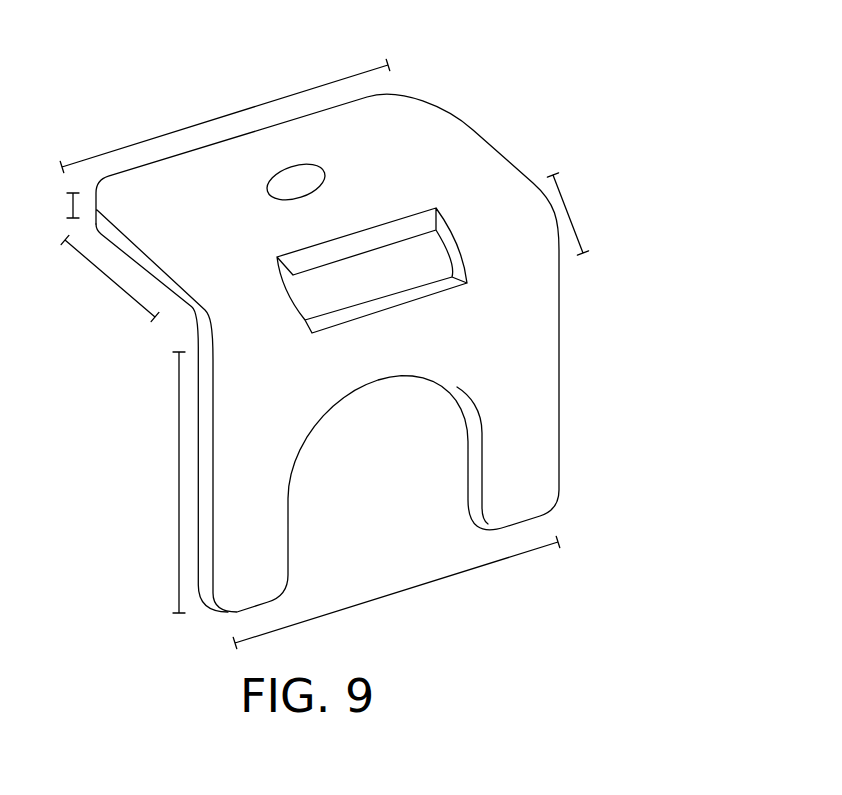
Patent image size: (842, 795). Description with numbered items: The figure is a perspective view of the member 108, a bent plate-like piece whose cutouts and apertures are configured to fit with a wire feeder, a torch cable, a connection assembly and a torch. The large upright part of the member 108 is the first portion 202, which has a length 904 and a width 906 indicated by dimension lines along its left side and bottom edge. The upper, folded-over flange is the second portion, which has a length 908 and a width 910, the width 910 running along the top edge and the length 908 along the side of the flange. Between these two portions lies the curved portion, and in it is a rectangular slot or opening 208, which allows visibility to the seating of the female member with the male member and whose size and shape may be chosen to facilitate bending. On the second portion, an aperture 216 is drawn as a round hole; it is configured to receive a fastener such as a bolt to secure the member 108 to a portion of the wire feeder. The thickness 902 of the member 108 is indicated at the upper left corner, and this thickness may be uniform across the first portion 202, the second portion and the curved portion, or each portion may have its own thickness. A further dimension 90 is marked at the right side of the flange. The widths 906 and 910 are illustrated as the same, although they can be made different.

The member 108 is at (628, 66).
The first portion 202 is at (566, 481).
The opening 208 is at (394, 300).
The aperture 216 is at (301, 186).
The flange depth dimension 90 is at (570, 213).
The thickness 902 is at (74, 207).
The length 904 is at (178, 510).
The width 906 is at (410, 590).
The length 908 is at (102, 278).
The width 910 is at (260, 103).